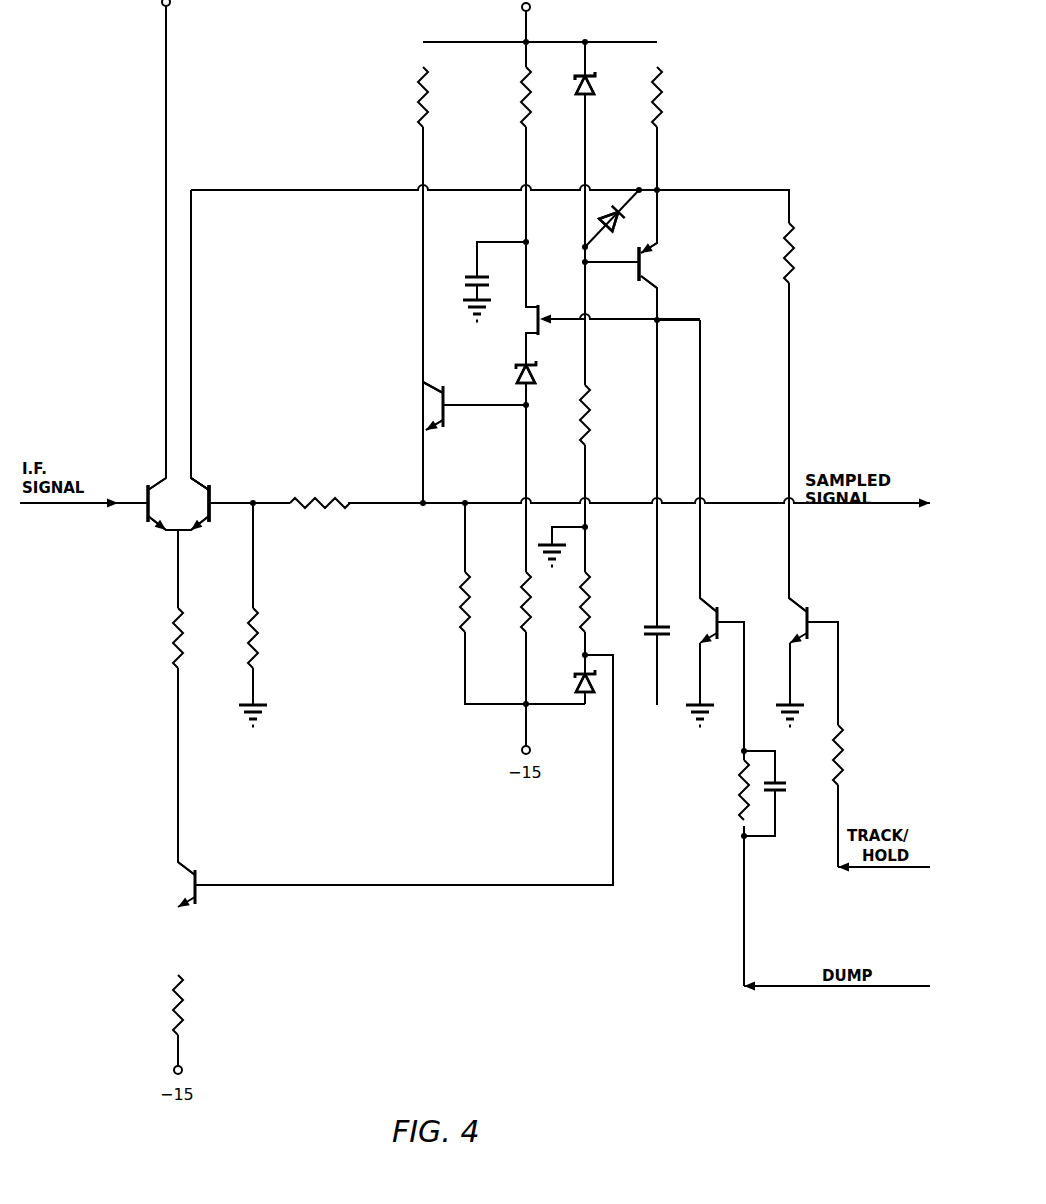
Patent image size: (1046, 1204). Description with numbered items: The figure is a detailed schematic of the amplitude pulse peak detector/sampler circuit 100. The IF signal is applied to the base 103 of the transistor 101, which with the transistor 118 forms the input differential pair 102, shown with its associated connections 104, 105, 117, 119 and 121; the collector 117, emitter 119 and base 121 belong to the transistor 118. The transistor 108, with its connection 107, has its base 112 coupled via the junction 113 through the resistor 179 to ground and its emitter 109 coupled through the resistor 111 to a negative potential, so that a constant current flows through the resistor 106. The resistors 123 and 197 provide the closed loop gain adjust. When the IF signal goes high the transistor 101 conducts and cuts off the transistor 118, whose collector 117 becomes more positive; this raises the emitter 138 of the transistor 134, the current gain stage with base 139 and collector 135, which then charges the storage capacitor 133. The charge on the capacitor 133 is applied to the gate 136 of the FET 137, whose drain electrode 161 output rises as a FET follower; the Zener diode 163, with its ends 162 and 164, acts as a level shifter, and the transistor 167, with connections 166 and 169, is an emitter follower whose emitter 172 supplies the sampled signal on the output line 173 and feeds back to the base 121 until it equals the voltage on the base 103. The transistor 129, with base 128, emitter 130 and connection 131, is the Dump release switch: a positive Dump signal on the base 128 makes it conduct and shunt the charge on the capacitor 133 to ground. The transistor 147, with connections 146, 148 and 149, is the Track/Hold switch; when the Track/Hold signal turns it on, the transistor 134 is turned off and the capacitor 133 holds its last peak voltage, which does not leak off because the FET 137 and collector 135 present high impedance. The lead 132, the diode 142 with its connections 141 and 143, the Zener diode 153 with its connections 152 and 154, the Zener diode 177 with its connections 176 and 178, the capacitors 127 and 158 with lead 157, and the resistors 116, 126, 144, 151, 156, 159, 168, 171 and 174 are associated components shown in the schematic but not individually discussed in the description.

The sample and hold circuit 100 is at (540, 947).
The transistor 101 is at (146, 465).
The transistor pair 102 is at (178, 506).
The base 103 is at (134, 508).
The emitter of first transistor 104 is at (160, 532).
The collector lead 105 is at (200, 465).
The resistor 106 is at (172, 640).
The collector of transistor 108 107 is at (188, 878).
The transistor 108 is at (246, 869).
The emitter 109 is at (184, 906).
The emitter resistor 111 is at (186, 1000).
The base 112 is at (288, 884).
The junction 113 is at (582, 652).
The resistor 116 is at (662, 92).
The collector 117 is at (204, 484).
The transistor 118 is at (262, 497).
The emitter 119 is at (200, 533).
The base 121 is at (232, 508).
The resistor 123 is at (258, 634).
The resistor 126 is at (738, 800).
The capacitor 127 is at (778, 796).
The base 128 is at (732, 620).
The transistor 129 is at (744, 593).
The emitter 130 is at (706, 634).
The collector of transistor 129 131 is at (706, 614).
The connection lead 132 is at (662, 318).
The storage capacitor 133 is at (652, 625).
The transistor 134 is at (638, 327).
The collector 135 is at (648, 274).
The gate 136 is at (558, 316).
The FET 137 is at (519, 329).
The emitter 138 is at (652, 256).
The base of transistor 134 139 is at (605, 268).
The diode 141 is at (598, 222).
The diode 142 is at (656, 231).
The diode lead 143 is at (636, 186).
The resistor 144 is at (795, 256).
The collector of transistor 147 146 is at (796, 604).
The transistor 147 is at (876, 614).
The emitter of transistor 147 148 is at (800, 630).
The base of transistor 147 149 is at (812, 628).
The resistor 151 is at (845, 755).
The zener diode body 152 is at (580, 95).
The zener diode 153 is at (570, 69).
The zener diode cathode 154 is at (590, 74).
The resistor 156 is at (592, 395).
The capacitor lead 157 is at (520, 275).
The capacitor 158 is at (470, 276).
The resistor 159 is at (522, 92).
The drain electrode 161 is at (530, 352).
The zener diode cathode 162 is at (516, 364).
The Zener diode 163 is at (577, 380).
The zener diode anode 164 is at (530, 390).
The base lead of transistor 167 166 is at (450, 402).
The transistor 167 is at (416, 419).
The resistor 168 is at (520, 588).
The collector of transistor 167 169 is at (425, 388).
The resistor 171 is at (418, 90).
The emitter 172 is at (428, 428).
The output line 173 is at (825, 506).
The resistor 174 is at (460, 604).
The zener diode anode 176 is at (588, 694).
The zener diode 177 is at (566, 687).
The zener diode cathode 178 is at (578, 672).
The resistor 179 is at (580, 602).
The resistor 197 is at (345, 498).